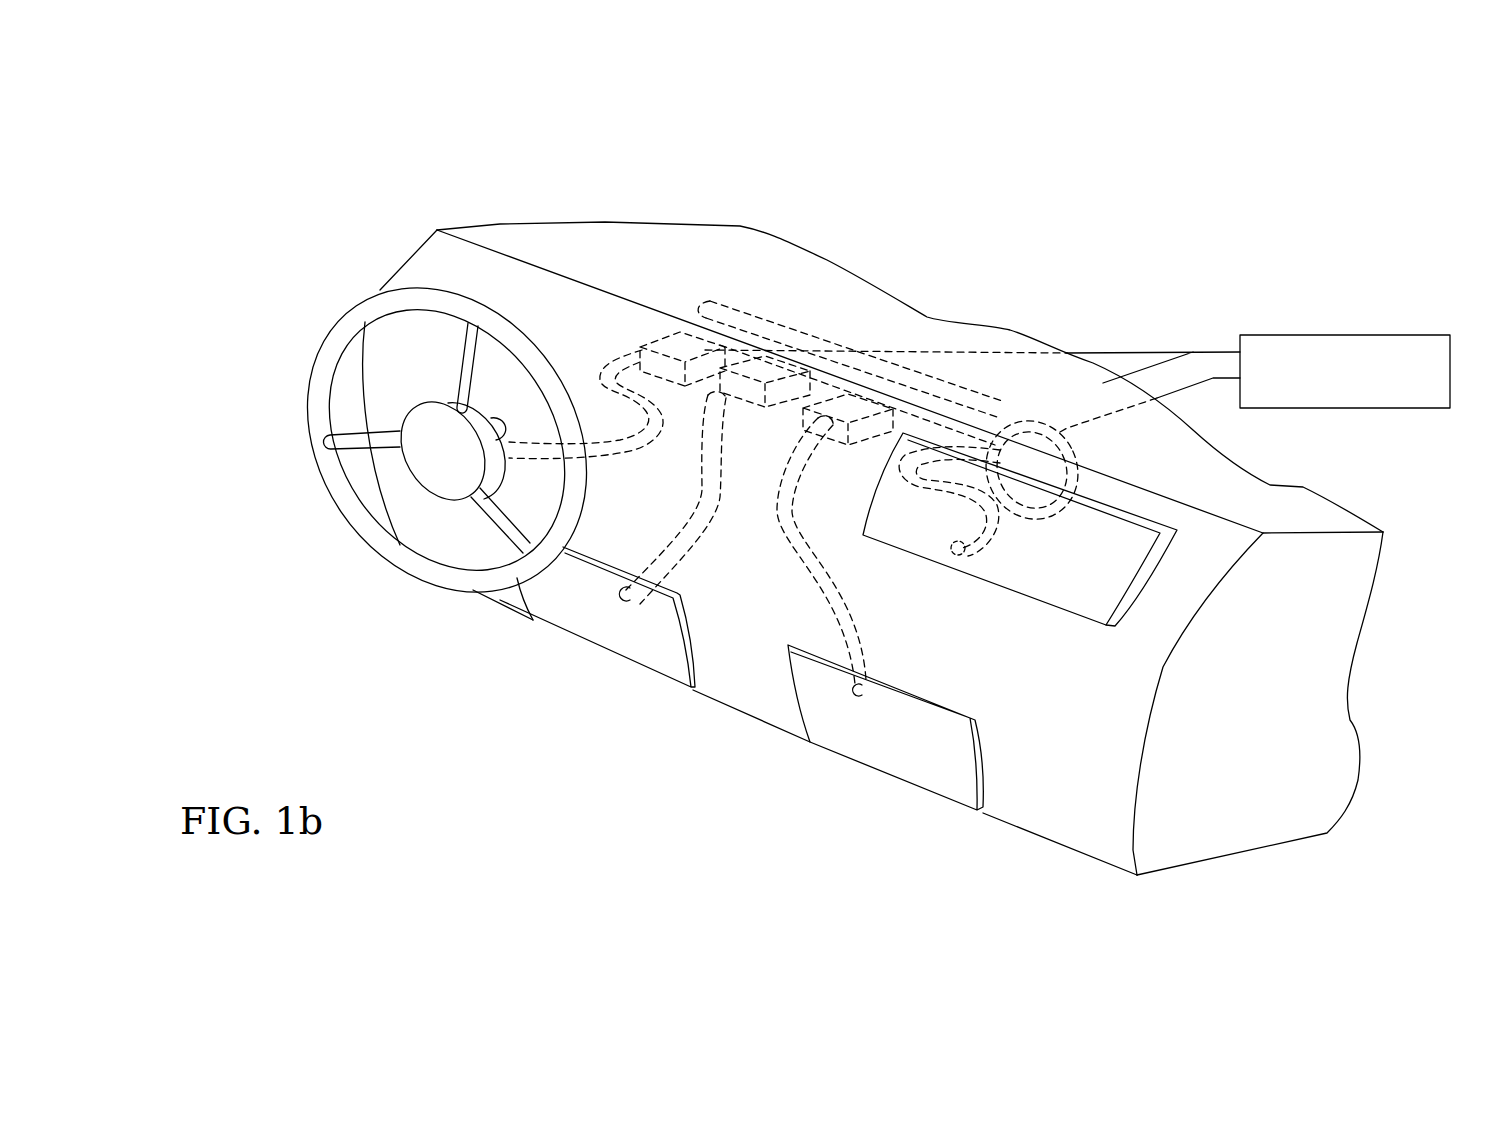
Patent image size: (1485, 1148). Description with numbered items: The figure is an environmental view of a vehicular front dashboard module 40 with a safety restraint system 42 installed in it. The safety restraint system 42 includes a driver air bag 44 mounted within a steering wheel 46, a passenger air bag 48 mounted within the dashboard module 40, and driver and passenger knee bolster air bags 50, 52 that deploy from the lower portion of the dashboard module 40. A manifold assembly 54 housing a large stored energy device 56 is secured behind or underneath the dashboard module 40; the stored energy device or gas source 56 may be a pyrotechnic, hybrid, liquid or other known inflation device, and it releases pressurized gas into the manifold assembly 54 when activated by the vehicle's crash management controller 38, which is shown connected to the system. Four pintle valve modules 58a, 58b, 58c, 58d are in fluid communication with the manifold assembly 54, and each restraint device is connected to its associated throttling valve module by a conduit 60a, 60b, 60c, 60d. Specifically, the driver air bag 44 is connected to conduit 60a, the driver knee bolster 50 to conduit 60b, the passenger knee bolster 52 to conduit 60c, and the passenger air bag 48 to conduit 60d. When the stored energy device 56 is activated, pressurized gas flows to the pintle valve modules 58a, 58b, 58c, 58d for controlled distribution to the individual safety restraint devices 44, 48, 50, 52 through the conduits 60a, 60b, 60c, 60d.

The crash management controller 38 is at (1270, 333).
The front dashboard module 40 is at (443, 253).
The safety restraint system 42 is at (590, 735).
The driver air bag 44 is at (425, 453).
The steering wheel 46 is at (326, 352).
The passenger air bag 48 is at (1087, 582).
The driver knee bolster air bag 50 is at (563, 598).
The passenger knee bolster air bag 52 is at (897, 732).
The manifold assembly 54 is at (740, 304).
The stored energy device 56 is at (703, 320).
The pintle valve module 58a is at (673, 338).
The pintle valve module 58b is at (770, 374).
The pintle valve module 58c is at (860, 405).
The pintle valve module 58d is at (977, 462).
The conduit 60a is at (653, 427).
The conduit 60b is at (713, 512).
The conduit 60c is at (838, 606).
The conduit 60d is at (957, 548).